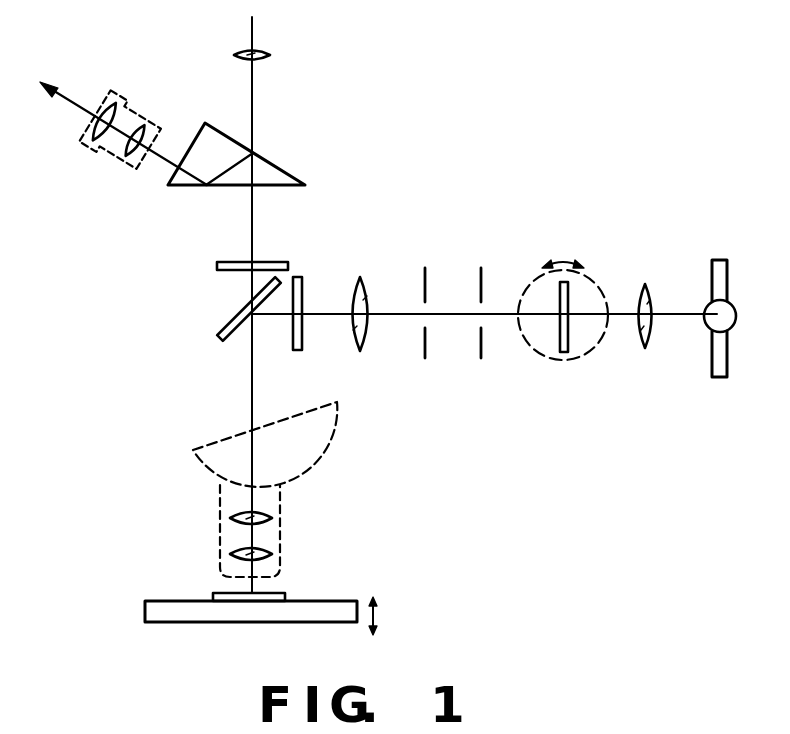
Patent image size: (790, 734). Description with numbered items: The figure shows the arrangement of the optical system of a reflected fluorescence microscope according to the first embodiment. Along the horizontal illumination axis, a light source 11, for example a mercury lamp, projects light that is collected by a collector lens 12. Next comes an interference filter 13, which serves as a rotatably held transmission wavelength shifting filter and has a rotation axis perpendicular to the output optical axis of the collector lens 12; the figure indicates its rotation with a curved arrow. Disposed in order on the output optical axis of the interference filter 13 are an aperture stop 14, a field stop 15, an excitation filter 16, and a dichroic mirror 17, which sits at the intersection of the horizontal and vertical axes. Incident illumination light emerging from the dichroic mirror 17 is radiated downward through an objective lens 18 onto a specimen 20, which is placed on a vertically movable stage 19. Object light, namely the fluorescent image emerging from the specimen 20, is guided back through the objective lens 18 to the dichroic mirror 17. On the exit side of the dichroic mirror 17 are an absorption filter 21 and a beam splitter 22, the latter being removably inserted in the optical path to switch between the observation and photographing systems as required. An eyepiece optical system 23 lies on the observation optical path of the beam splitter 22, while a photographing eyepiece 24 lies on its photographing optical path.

The light source 11 is at (720, 382).
The collector lens 12 is at (645, 355).
The interference filter 13 is at (563, 362).
The aperture stop 14 is at (481, 362).
The field stop 15 is at (425, 362).
The excitation filter 16 is at (303, 345).
The dichroic mirror 17 is at (222, 330).
The objective lens 18 is at (220, 524).
The stage 19 is at (347, 602).
The specimen 20 is at (283, 596).
The absorption filter 21 is at (283, 251).
The beam splitter 22 is at (282, 163).
The eyepiece optical system 23 is at (93, 153).
The photographing eyepiece 24 is at (272, 54).